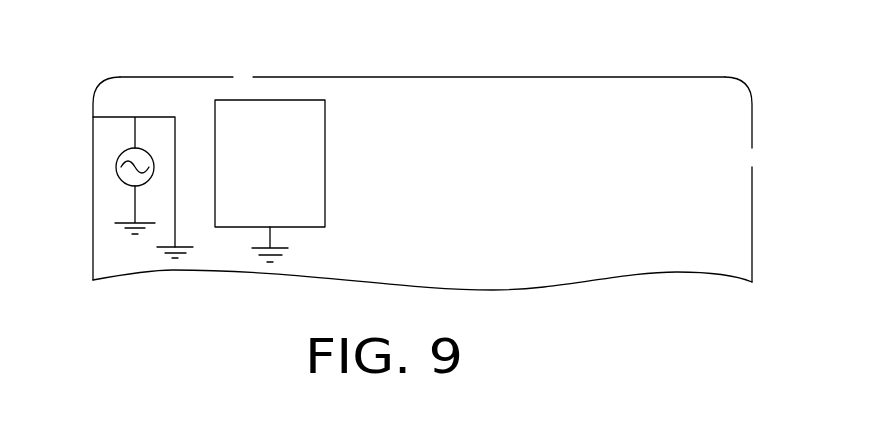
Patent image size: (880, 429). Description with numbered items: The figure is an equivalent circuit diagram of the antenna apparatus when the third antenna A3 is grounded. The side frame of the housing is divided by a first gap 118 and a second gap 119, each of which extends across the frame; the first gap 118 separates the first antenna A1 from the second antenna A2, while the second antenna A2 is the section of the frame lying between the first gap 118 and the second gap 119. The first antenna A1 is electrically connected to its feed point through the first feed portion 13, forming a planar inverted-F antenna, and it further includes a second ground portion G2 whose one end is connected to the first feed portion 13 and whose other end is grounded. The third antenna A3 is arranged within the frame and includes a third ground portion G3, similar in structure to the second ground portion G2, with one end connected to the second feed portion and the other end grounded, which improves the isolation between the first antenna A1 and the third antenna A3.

The first gap 118 is at (242, 77).
The second gap 119 is at (748, 159).
The first antenna A1 is at (105, 152).
The second antenna A2 is at (442, 77).
The third antenna A3 is at (308, 100).
The first feed portion 13 is at (135, 196).
The second ground portion G2 is at (175, 227).
The third ground portion G3 is at (260, 238).